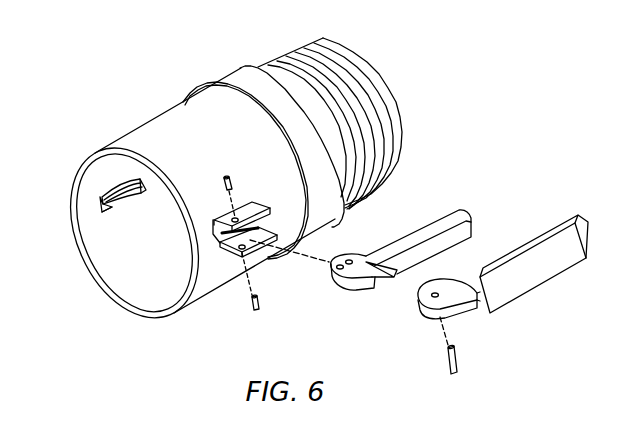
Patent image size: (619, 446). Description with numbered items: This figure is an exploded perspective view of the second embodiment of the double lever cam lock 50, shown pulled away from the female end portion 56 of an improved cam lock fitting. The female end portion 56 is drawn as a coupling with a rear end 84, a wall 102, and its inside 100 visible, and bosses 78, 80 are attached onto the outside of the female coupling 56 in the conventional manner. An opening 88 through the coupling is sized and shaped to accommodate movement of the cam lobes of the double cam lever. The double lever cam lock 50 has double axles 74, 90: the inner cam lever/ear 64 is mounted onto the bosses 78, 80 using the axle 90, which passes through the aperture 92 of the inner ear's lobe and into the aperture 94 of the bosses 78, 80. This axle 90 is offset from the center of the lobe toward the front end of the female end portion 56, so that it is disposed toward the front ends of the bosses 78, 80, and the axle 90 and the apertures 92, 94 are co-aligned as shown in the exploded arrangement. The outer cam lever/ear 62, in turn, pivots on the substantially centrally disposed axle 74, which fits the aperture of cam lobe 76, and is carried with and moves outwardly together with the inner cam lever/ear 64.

The double lever cam lock 50 is at (506, 218).
The female end portion 56 is at (238, 69).
The rear end 84 is at (387, 86).
The inside 100 is at (121, 252).
The opening 88 is at (102, 205).
The wall 102 is at (107, 213).
The boss 78 is at (225, 218).
The aperture 94 is at (232, 217).
The boss 80 is at (258, 251).
The axle 90 is at (233, 177).
The inner cam lever/ear 64 is at (413, 242).
The aperture of cam lobe 76 is at (350, 259).
The aperture 92 is at (341, 264).
The outer cam lever/ear 62 is at (532, 278).
The axle 74 is at (457, 353).